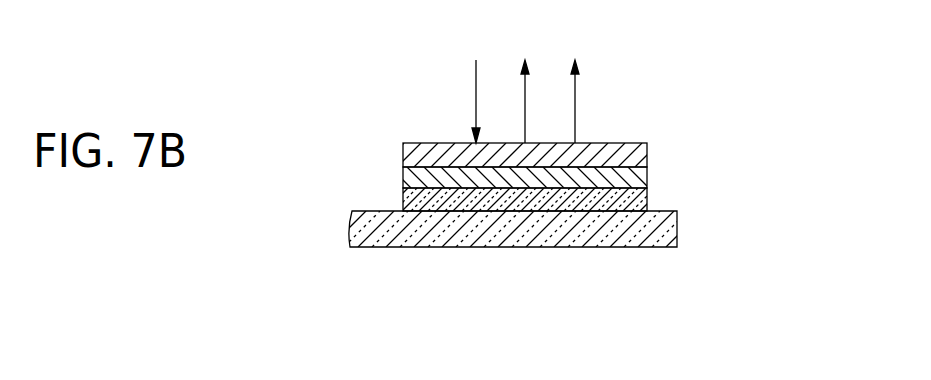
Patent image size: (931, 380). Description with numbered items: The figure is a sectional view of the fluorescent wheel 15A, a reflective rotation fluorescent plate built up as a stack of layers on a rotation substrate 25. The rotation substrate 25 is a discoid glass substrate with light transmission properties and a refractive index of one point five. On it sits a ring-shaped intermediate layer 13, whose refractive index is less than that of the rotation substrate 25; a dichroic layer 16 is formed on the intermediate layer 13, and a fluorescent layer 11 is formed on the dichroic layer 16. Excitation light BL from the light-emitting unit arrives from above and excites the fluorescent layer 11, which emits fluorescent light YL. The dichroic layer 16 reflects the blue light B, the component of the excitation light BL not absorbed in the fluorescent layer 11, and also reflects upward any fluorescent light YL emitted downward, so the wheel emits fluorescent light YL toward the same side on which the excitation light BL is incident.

The fluorescent wheel 15A is at (676, 109).
The fluorescent layer 11 is at (648, 147).
The dichroic layer 16 is at (648, 177).
The intermediate layer 13 is at (640, 198).
The rotation substrate 25 is at (668, 236).
The excitation light BL is at (475, 112).
The blue light B is at (527, 95).
The fluorescent light YL is at (577, 116).